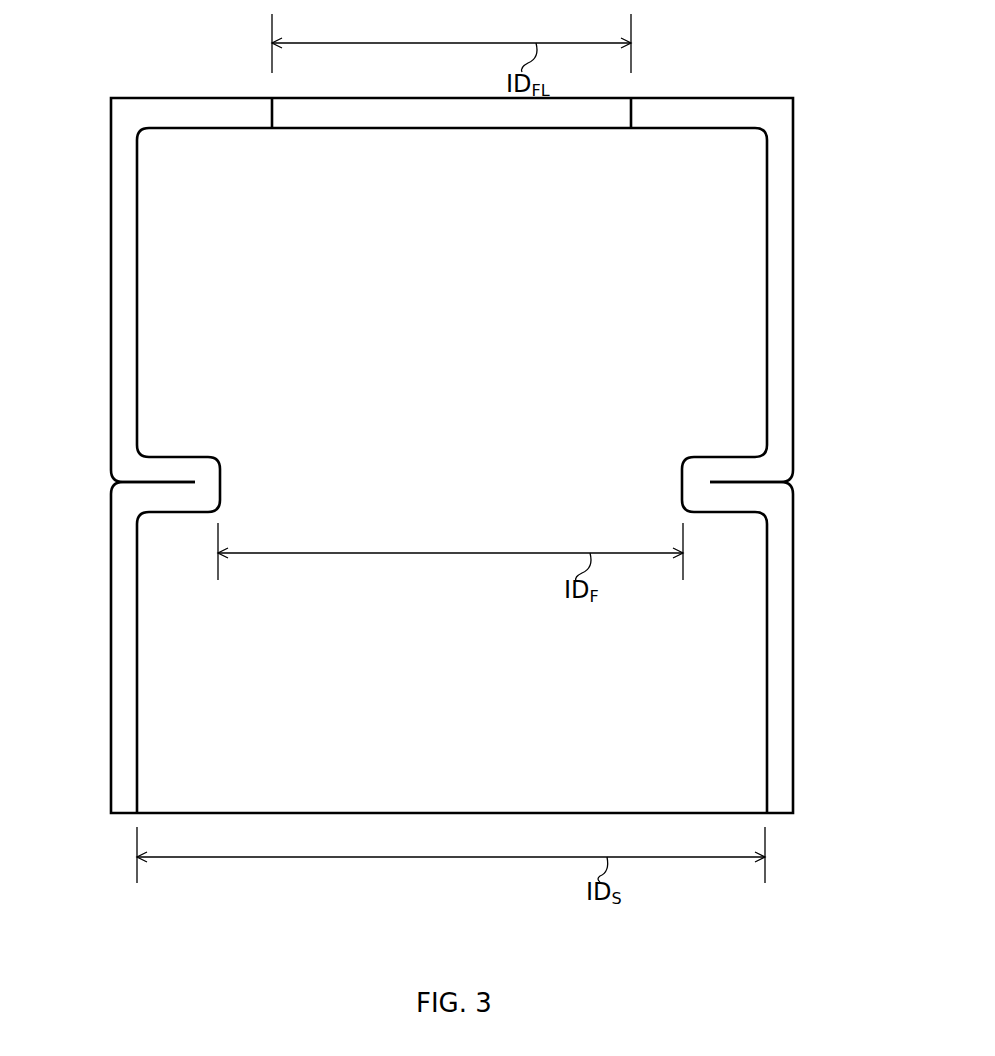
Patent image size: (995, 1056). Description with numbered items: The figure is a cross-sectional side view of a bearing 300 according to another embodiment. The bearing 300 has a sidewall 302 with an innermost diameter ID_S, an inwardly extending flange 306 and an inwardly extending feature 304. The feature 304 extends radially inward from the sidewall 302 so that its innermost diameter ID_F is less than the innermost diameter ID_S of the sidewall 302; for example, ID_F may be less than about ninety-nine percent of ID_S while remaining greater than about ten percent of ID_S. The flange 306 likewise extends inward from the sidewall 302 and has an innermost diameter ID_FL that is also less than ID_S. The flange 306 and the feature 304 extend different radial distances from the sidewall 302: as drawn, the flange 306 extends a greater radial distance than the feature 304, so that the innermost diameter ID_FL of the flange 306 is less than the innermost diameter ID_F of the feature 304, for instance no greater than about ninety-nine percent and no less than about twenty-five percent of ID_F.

The bearing 300 is at (446, 423).
The sidewall 302 is at (780, 697).
The inwardly extending feature 304 is at (168, 456).
The inwardly extending flange 306 is at (725, 105).